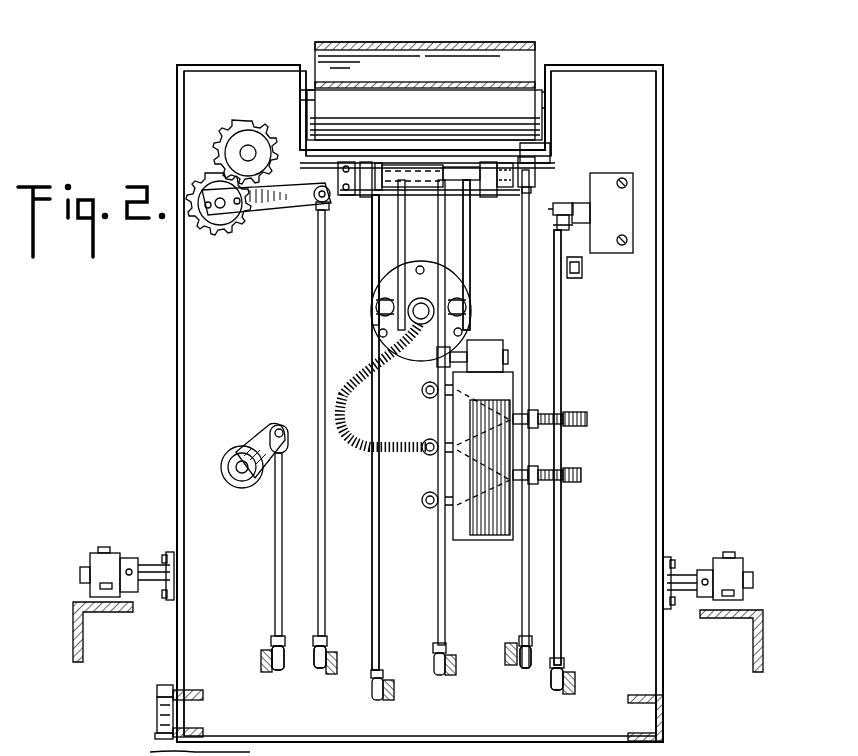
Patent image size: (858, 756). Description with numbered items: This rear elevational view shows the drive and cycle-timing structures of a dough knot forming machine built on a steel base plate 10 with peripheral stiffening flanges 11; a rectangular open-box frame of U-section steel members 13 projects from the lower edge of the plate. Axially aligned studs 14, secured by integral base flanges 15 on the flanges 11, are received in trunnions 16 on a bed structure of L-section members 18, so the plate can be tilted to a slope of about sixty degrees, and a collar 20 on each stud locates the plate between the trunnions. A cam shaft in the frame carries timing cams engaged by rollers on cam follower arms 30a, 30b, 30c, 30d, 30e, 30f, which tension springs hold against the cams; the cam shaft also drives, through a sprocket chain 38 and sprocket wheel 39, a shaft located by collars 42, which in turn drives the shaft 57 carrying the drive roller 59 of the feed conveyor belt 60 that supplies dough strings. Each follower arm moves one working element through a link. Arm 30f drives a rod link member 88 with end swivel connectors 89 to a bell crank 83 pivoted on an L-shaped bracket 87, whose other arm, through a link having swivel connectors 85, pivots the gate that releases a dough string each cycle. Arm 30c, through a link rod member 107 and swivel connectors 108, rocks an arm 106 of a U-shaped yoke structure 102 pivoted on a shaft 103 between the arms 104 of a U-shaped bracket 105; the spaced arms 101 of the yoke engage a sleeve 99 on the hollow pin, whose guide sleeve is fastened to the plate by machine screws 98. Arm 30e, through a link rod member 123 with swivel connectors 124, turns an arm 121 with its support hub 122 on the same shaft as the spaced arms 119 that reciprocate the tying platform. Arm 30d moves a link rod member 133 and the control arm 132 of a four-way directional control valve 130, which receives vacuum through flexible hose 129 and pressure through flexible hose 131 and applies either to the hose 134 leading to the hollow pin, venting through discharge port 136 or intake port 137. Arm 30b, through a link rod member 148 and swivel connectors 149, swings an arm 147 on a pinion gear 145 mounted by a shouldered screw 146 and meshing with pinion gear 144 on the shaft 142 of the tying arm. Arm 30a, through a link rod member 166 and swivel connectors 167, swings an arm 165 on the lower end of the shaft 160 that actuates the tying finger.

The base plate 10 is at (645, 344).
The peripheral edge stiffening flanges 11 is at (178, 373).
The side and end structural steel members 13 is at (663, 718).
The studs 14 is at (146, 565).
The base flanges 15 is at (170, 552).
The trunnions 16 is at (88, 553).
The structural steel members 18 is at (73, 643).
The collar 20 is at (122, 558).
The cam follower arm 30a is at (267, 672).
The cam follower arm 30b is at (330, 674).
The cam follower arm 30c is at (386, 700).
The cam follower arm 30d is at (450, 676).
The cam follower arm 30e is at (511, 666).
The cam follower arm 30f is at (565, 692).
The sprocket chain 38 is at (158, 686).
The sprocket wheel 39 is at (157, 710).
The collars 42 is at (150, 752).
The shaft 57 is at (303, 95).
The drive roller 59 is at (548, 95).
The feed conveyor belt 60 is at (446, 48).
The bell crank 83 is at (574, 203).
The end swivel connectors 85 is at (584, 270).
The L-shaped bracket 87 is at (622, 175).
The rod link member 88 is at (561, 520).
The end swivel connectors 89 is at (558, 232).
The machine screws 98 is at (460, 328).
The sleeve 99 is at (430, 300).
The spaced arms 101 is at (437, 240).
The U-shaped yoke structure 102 is at (420, 165).
The shaft 103 is at (460, 167).
The arms 104 is at (365, 162).
The U-shaped bracket 105 is at (478, 200).
The arm 106 is at (378, 163).
The link rod member 107 is at (372, 475).
The end swivel connectors 108 is at (355, 195).
The spaced arms 119 is at (470, 251).
The arm 121 is at (545, 150).
The integral support hub 122 is at (505, 163).
The link rod member 123 is at (522, 580).
The end swivel connectors 124 is at (548, 175).
The flexible hose 129 is at (570, 470).
The four-way directional control valve 130 is at (508, 386).
The flexible hose 131 is at (570, 412).
The valve control arm 132 is at (470, 345).
The link rod member 133 is at (438, 578).
The flexible hose 134 is at (420, 447).
The air discharge port 136 is at (420, 392).
The air intake port 137 is at (421, 502).
The shaft 142 is at (248, 148).
The pinion gear 144 is at (215, 148).
The pinion gear 145 is at (218, 230).
The shouldered screw 146 is at (205, 238).
The arm 147 is at (258, 212).
The link rod member 148 is at (318, 320).
The end swivel connectors 149 is at (318, 208).
The shaft 160 is at (228, 462).
The arm 165 is at (252, 435).
The link rod member 166 is at (275, 548).
The end swivel connectors 167 is at (280, 425).